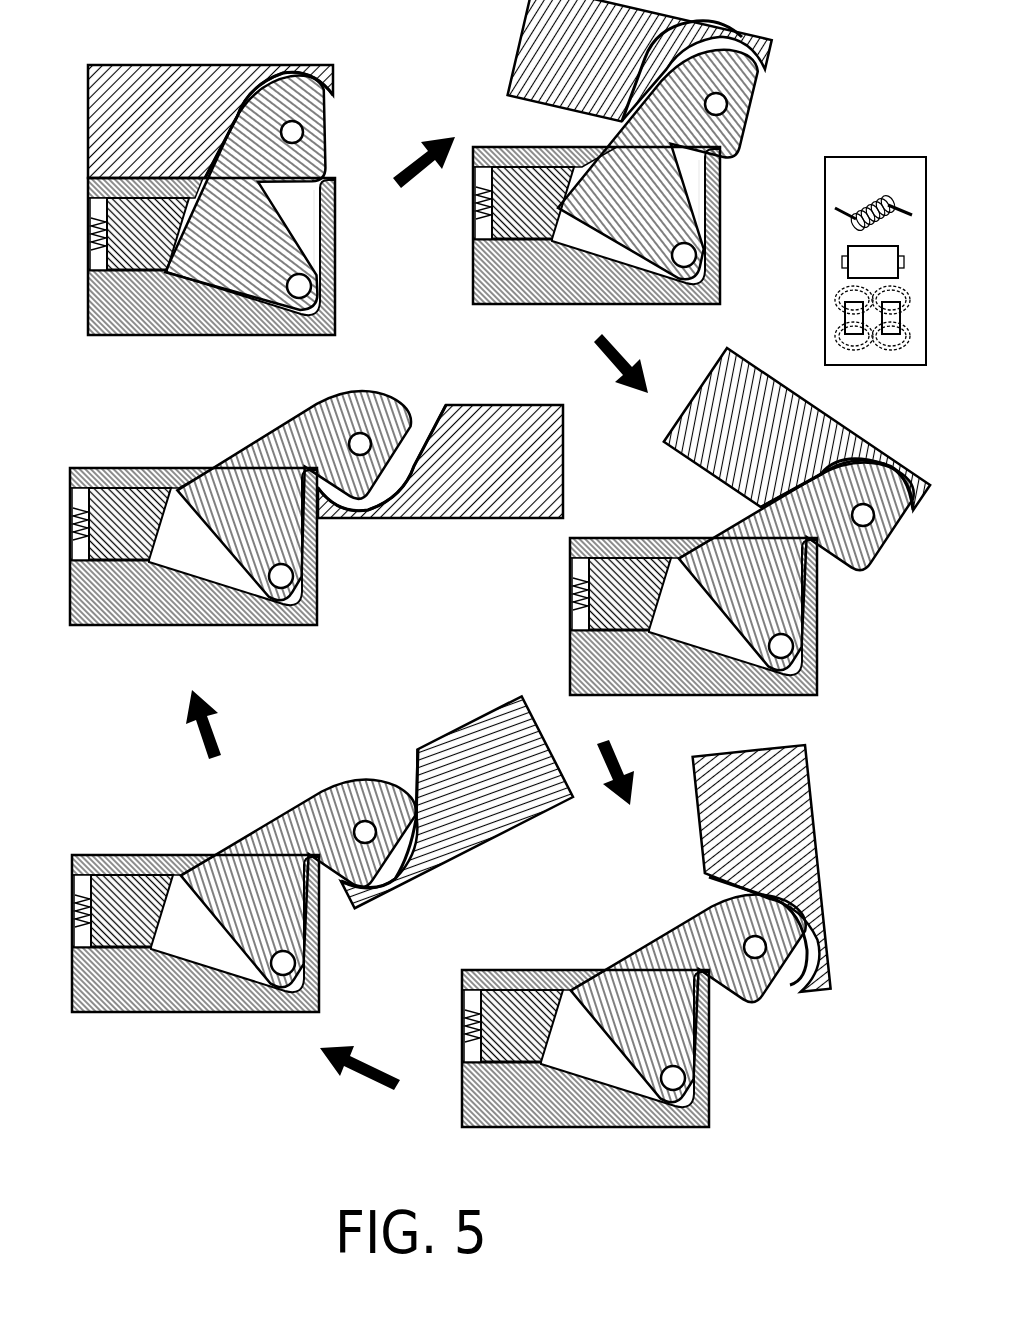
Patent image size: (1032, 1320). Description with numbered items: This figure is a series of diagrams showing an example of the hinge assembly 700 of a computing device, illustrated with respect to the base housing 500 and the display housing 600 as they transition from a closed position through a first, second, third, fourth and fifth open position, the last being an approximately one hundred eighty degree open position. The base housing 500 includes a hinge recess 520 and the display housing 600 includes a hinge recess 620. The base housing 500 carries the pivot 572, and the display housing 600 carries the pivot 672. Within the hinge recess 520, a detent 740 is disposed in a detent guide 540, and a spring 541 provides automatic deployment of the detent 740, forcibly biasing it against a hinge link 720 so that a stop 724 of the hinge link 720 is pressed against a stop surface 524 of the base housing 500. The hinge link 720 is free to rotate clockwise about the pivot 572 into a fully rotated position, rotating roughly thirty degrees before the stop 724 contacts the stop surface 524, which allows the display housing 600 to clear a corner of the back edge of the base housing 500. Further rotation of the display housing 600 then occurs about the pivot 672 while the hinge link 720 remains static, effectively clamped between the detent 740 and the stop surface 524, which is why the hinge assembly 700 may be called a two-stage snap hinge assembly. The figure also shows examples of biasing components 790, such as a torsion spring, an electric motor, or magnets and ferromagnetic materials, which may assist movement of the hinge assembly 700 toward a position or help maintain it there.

The base housing 500 is at (160, 317).
The hinge recess 520 is at (460, 620).
The stop surface 524 is at (322, 232).
The detent guide 540 is at (88, 272).
The spring 541 is at (83, 236).
The pivot 572 is at (312, 297).
The display housing 600 is at (509, 523).
The hinge recess 620 is at (440, 392).
The pivot 672 is at (306, 139).
The hinge assembly 700 is at (470, 594).
The hinge link 720 is at (538, 594).
The stop 724 is at (277, 217).
The detent 740 is at (157, 244).
The biasing components 790 is at (893, 190).